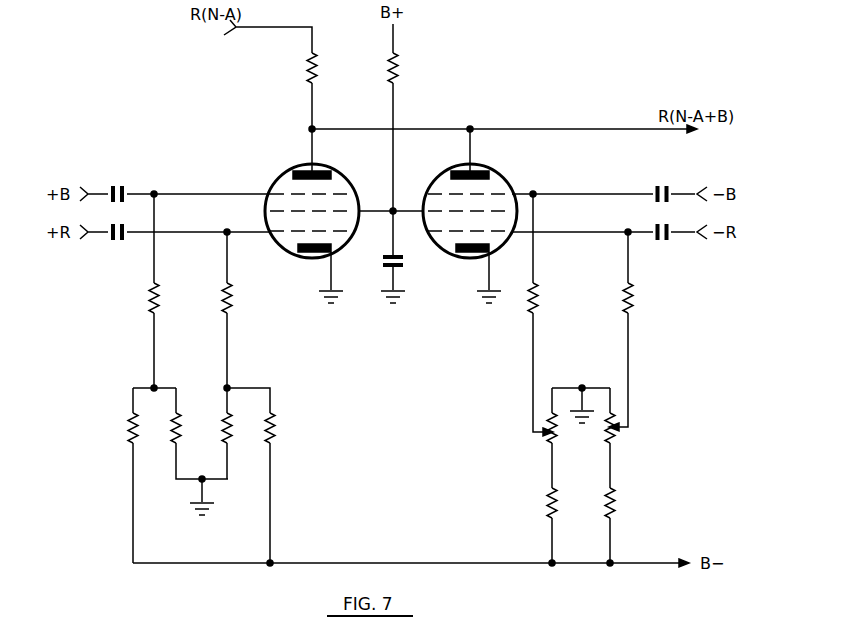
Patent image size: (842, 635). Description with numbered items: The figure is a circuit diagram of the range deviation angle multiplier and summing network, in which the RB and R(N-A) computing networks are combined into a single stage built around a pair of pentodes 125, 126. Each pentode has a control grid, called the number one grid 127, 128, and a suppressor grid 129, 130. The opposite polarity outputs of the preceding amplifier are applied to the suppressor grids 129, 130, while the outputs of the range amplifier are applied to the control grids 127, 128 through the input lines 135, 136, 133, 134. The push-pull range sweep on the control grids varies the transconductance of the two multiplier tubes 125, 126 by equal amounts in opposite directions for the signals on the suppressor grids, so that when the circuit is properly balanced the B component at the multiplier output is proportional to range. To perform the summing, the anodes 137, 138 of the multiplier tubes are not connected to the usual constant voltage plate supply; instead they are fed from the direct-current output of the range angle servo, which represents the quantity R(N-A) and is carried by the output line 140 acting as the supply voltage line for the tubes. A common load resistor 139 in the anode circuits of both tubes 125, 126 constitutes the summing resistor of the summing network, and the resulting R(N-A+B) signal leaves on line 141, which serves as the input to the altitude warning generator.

The pentode 125 is at (287, 190).
The pentode 126 is at (513, 173).
The number 1 grid 127 is at (298, 233).
The number 1 grid 128 is at (463, 233).
The suppressor grid 129 is at (333, 192).
The suppressor grid 130 is at (440, 192).
The input line 133 is at (180, 232).
The input line 134 is at (563, 231).
The input line 135 is at (225, 193).
The input line 136 is at (582, 194).
The anode 137 is at (302, 171).
The anode 138 is at (496, 172).
The common load resistor 139 is at (314, 76).
The output line 140 is at (269, 28).
The line 141 is at (583, 130).